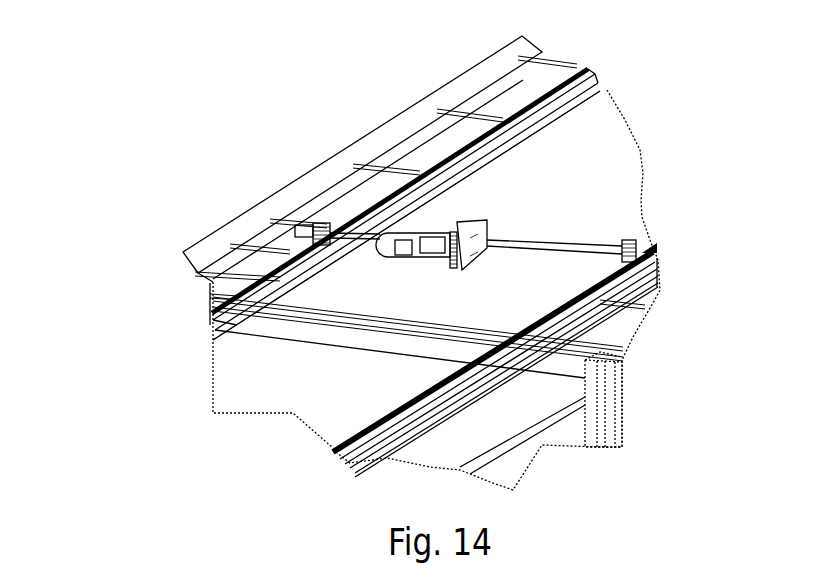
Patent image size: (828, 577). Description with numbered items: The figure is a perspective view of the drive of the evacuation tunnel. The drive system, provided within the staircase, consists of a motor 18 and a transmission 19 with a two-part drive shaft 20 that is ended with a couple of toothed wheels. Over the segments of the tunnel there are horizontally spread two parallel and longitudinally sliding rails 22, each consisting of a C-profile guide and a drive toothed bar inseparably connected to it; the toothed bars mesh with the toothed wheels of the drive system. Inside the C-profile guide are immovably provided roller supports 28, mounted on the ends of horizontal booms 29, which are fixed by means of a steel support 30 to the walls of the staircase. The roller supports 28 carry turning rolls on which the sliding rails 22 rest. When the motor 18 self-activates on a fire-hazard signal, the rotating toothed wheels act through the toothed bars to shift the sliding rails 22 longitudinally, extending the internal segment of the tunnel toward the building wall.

The motor 18 is at (405, 233).
The transmission 19 is at (460, 226).
The two-part drive shaft 20 is at (558, 245).
The sliding rails 22 is at (397, 406).
The roller supports 28 is at (603, 302).
The horizontal booms 29 is at (638, 302).
The steel support 30 is at (476, 80).